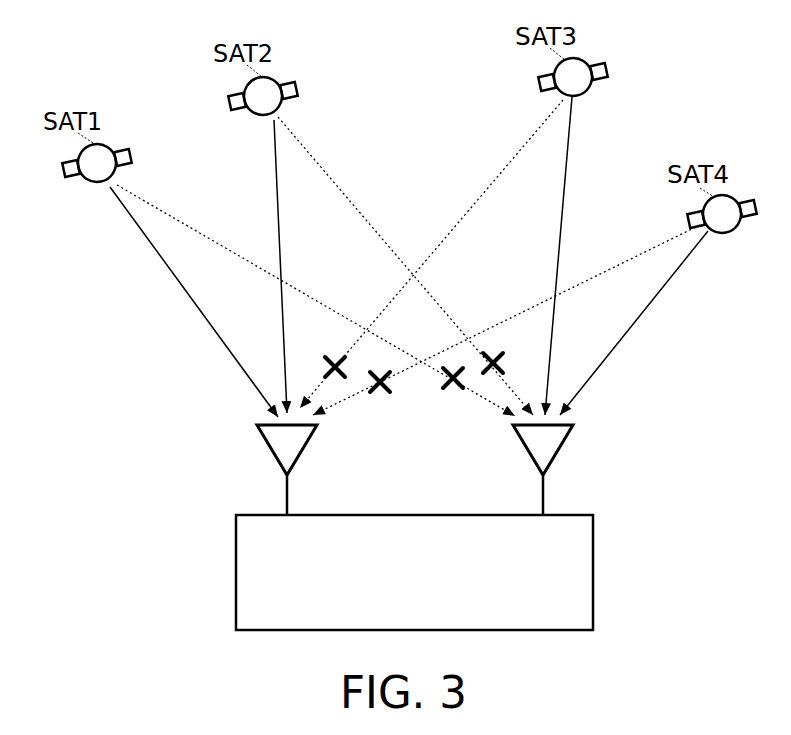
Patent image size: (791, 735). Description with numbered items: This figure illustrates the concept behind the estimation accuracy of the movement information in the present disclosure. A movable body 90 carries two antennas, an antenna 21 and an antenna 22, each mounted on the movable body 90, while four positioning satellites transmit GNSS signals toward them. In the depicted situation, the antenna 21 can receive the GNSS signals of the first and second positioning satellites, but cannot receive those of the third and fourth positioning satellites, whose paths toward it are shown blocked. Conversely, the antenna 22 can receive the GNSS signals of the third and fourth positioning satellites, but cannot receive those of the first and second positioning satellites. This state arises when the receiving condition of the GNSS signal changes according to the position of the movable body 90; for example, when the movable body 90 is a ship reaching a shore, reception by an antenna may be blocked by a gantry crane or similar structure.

The antenna 21 is at (313, 437).
The antenna 22 is at (568, 438).
The movable body 90 is at (595, 540).